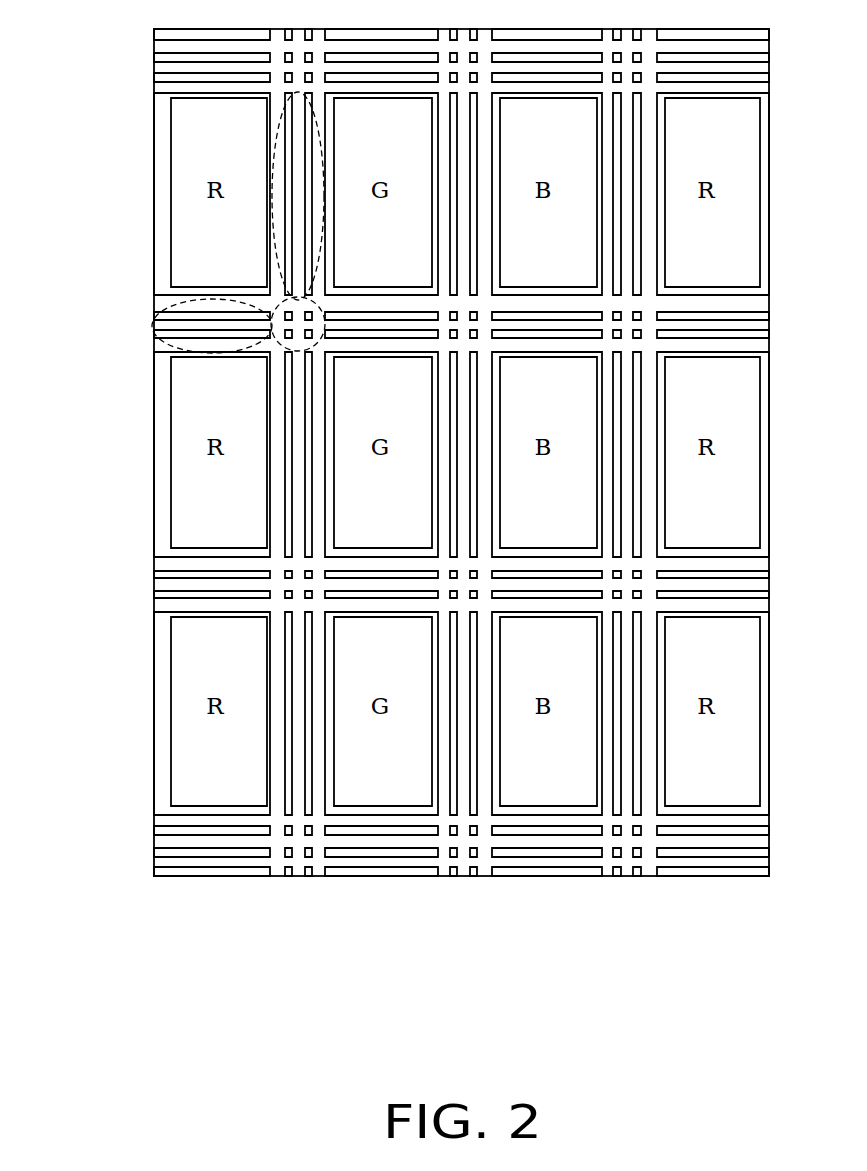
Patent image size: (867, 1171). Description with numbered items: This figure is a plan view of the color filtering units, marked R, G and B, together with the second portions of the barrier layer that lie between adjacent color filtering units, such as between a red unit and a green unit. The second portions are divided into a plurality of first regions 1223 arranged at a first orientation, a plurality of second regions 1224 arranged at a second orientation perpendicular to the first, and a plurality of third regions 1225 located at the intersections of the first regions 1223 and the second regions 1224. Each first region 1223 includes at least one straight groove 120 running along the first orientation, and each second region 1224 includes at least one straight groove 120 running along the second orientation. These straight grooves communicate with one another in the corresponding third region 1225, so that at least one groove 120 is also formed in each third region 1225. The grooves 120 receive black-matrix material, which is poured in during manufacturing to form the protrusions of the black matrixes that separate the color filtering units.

The groove 120 is at (295, 107).
The first region 1223 is at (172, 310).
The second region 1224 is at (280, 120).
The third region 1225 is at (280, 300).